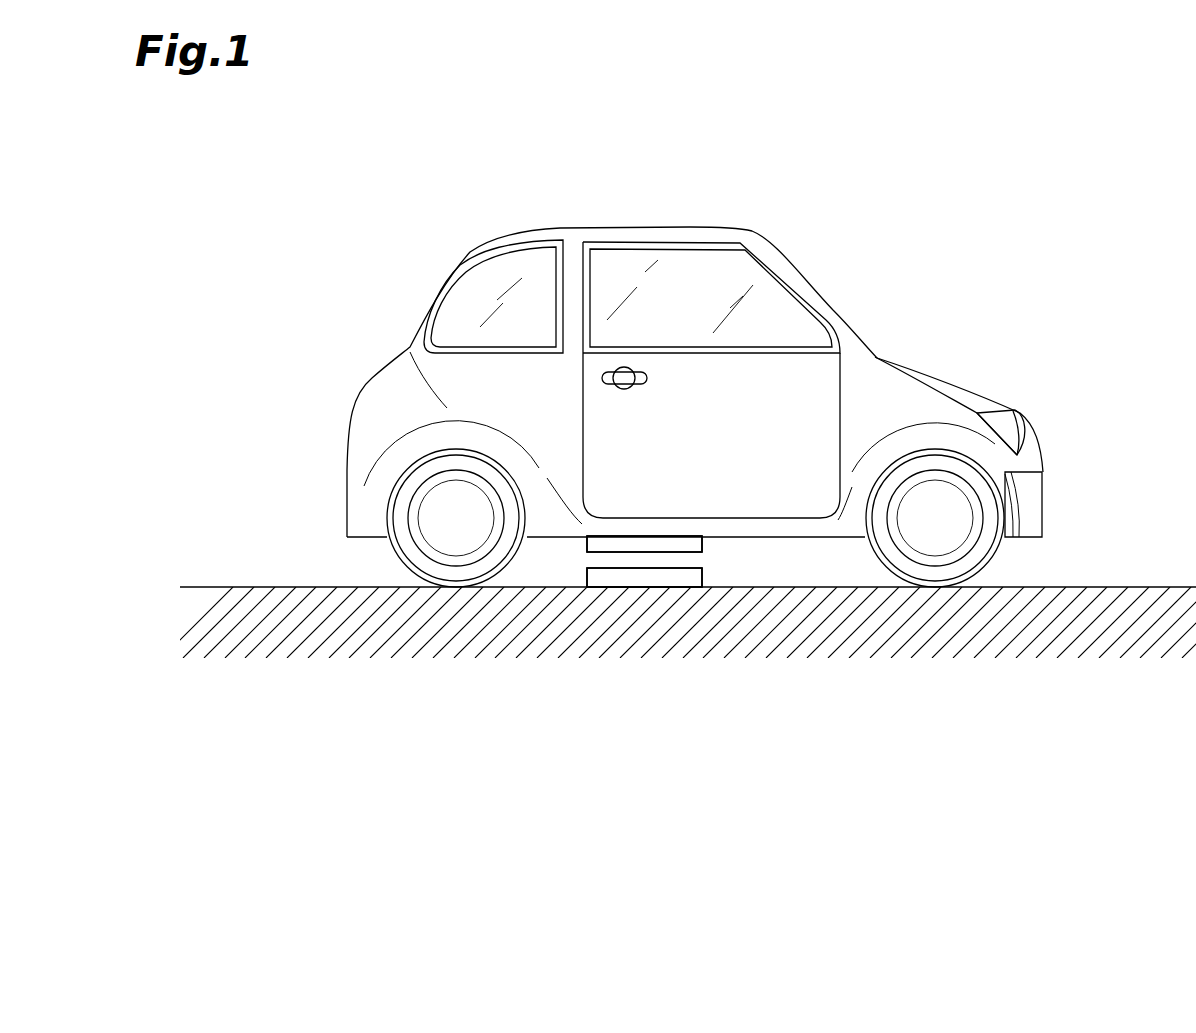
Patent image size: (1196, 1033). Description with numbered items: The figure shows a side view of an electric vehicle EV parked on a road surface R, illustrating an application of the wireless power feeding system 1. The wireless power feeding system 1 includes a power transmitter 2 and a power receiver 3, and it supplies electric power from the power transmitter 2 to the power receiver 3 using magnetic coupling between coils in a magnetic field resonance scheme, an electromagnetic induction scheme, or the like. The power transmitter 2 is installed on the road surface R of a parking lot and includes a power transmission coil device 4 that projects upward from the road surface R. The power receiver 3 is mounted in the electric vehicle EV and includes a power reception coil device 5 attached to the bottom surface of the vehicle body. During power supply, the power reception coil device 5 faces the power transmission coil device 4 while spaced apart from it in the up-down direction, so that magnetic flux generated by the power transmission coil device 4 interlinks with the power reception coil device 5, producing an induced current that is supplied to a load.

The wireless power feeding system 1 is at (787, 562).
The power transmitter 2 is at (563, 575).
The power receiver 3 is at (547, 545).
The power transmission coil device 4 is at (705, 580).
The power reception coil device 5 is at (705, 544).
The electric vehicle EV is at (665, 227).
The road surface R is at (1135, 587).